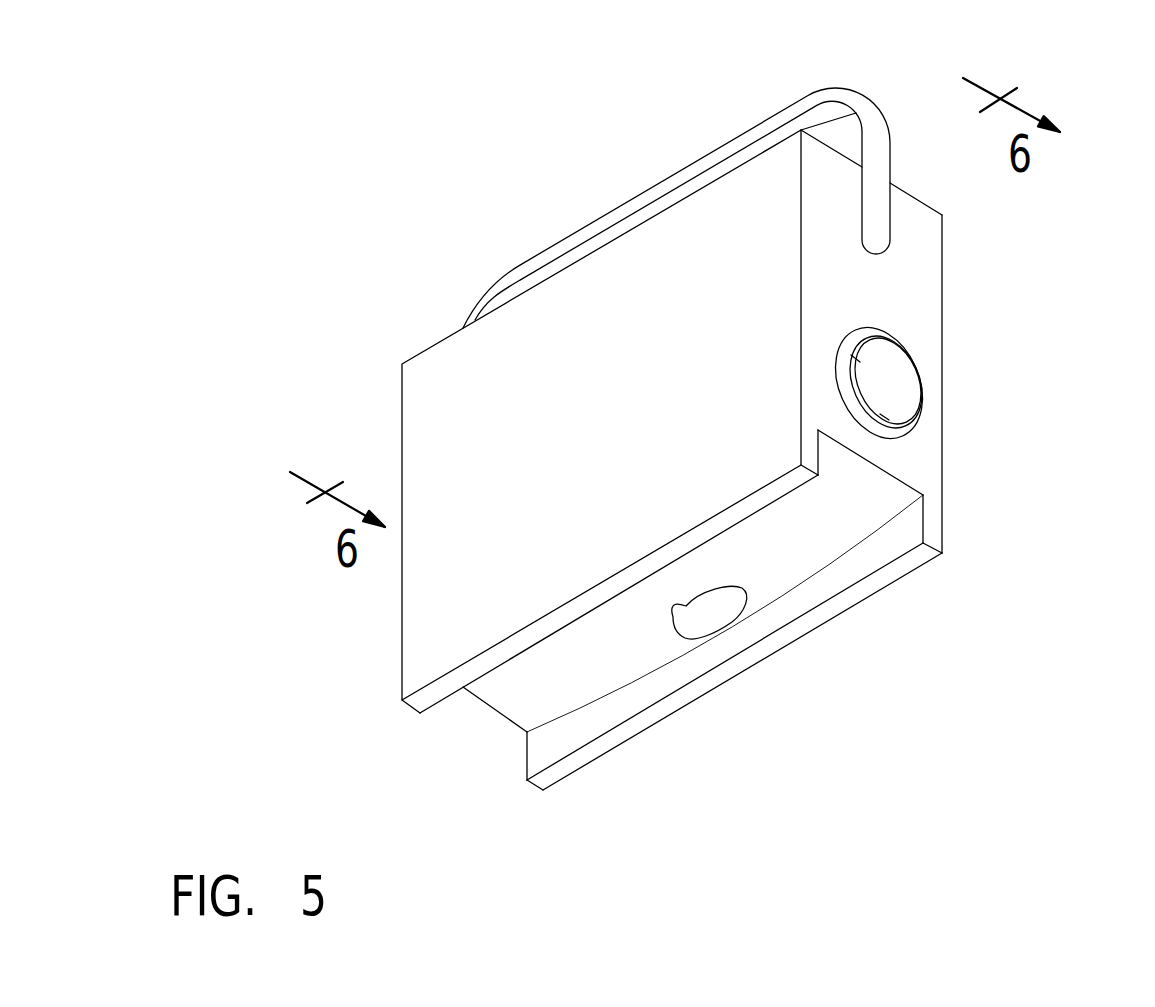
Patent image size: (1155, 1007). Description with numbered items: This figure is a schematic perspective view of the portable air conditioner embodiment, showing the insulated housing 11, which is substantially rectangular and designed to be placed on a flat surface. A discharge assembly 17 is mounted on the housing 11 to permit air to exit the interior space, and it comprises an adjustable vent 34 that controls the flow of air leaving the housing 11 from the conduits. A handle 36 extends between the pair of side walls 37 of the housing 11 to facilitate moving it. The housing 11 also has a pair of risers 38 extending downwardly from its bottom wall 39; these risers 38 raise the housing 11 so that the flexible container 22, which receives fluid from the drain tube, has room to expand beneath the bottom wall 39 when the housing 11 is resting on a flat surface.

The insulated housing 11 is at (735, 463).
The discharge assembly 17 is at (967, 352).
The flexible container 22 is at (710, 623).
The adjustable vent 34 is at (900, 387).
The handle 36 is at (843, 93).
The side walls 37 is at (920, 470).
The risers 38 is at (427, 698).
The bottom wall 39 is at (522, 682).